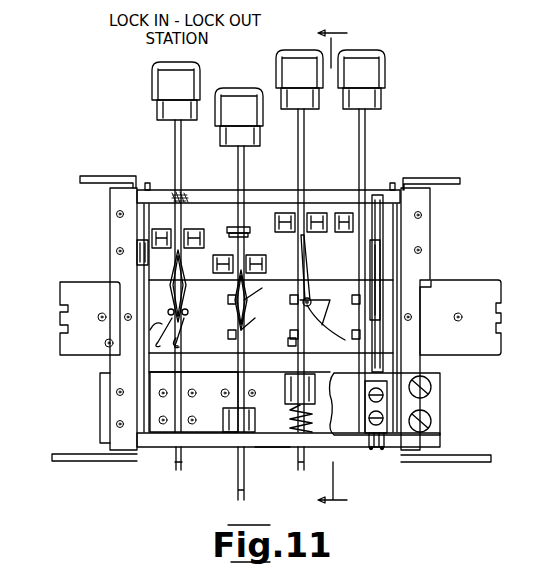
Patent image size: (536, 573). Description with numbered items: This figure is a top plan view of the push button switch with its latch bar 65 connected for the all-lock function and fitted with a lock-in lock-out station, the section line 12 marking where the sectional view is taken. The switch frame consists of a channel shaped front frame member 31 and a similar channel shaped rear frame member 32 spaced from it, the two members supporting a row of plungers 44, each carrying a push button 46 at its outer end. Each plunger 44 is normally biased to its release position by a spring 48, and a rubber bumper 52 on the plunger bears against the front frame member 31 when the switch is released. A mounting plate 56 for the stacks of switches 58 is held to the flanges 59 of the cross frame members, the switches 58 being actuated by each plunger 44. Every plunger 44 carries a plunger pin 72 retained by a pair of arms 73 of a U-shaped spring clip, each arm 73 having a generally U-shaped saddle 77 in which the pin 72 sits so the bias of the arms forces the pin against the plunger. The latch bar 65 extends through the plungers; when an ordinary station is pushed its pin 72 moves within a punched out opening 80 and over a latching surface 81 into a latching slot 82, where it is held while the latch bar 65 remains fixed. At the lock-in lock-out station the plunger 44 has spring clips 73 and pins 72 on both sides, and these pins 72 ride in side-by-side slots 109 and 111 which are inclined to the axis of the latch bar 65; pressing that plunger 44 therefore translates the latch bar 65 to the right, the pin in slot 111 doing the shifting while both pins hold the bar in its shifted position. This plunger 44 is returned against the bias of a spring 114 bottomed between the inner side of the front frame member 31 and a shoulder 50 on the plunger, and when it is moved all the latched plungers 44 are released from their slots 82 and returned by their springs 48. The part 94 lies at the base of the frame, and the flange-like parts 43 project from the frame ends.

The section line 12- 12 is at (341, 267).
The front frame member 31 is at (268, 190).
The rear frame member 32 is at (209, 449).
The mounting flange 43 is at (450, 177).
The plunger 44 is at (180, 157).
The push button 46 is at (200, 80).
The spring 48 is at (315, 413).
The shoulder 50 is at (190, 203).
The rubber bumper 52 is at (252, 236).
The mounting plate 56 is at (356, 448).
The switches 58 is at (378, 345).
The flanges 59 is at (114, 263).
The latch bar 65 is at (470, 285).
The plunger pin 72 is at (308, 297).
The arms of spring clip 73 is at (150, 283).
The U-shaped saddle 77 is at (172, 310).
The punched out opening 80 is at (318, 291).
The latching surface 81 is at (262, 306).
The latching slot 82 is at (291, 346).
The base member 94 is at (271, 449).
The slot 109 is at (150, 332).
The slot 111 is at (178, 339).
The spring 114 is at (186, 200).